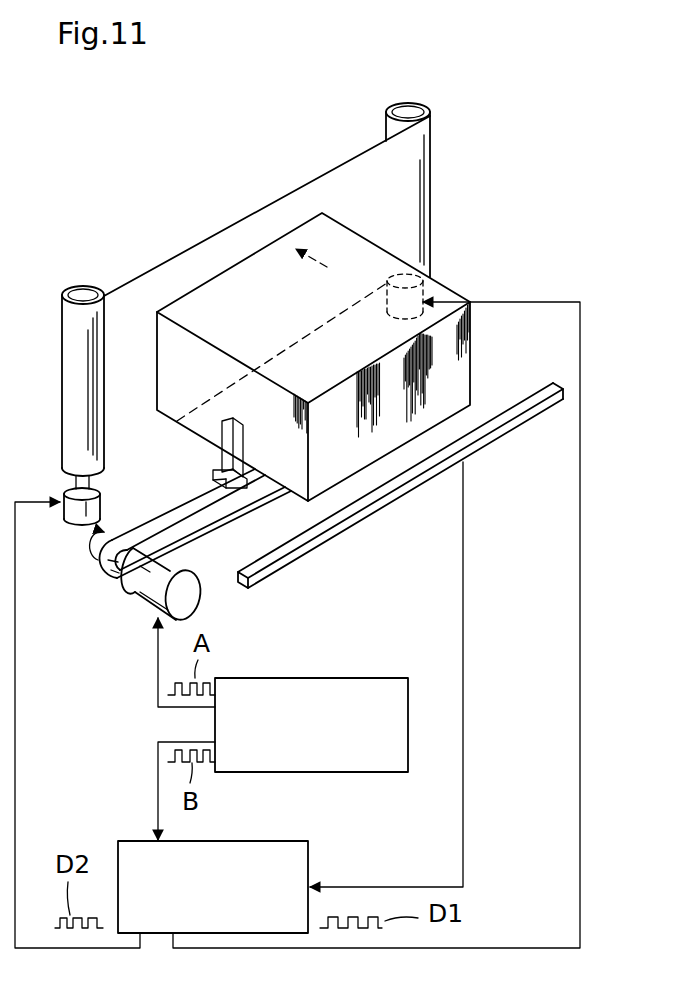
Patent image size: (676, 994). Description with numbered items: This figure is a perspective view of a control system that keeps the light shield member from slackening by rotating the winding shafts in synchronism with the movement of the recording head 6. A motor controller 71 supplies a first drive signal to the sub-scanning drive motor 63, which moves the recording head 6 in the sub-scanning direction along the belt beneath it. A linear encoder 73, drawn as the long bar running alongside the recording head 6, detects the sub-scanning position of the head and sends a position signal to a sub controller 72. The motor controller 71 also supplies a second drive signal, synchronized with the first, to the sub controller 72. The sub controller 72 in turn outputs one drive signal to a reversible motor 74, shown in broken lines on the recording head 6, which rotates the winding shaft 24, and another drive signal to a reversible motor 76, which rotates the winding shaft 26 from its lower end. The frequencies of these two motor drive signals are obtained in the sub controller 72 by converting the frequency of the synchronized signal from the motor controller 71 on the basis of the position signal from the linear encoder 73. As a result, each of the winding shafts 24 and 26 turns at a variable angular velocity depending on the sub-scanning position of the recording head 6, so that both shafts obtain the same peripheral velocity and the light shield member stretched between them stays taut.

The winding shaft 24 is at (405, 103).
The winding shaft 26 is at (78, 290).
The recording head 6 is at (457, 357).
The reversible motor 74 is at (432, 274).
The linear encoder 73 is at (482, 444).
The reversible motor 76 is at (63, 484).
The sub-scanning drive motor 63 is at (143, 602).
The motor controller 71 is at (297, 685).
The sub controller 72 is at (308, 862).